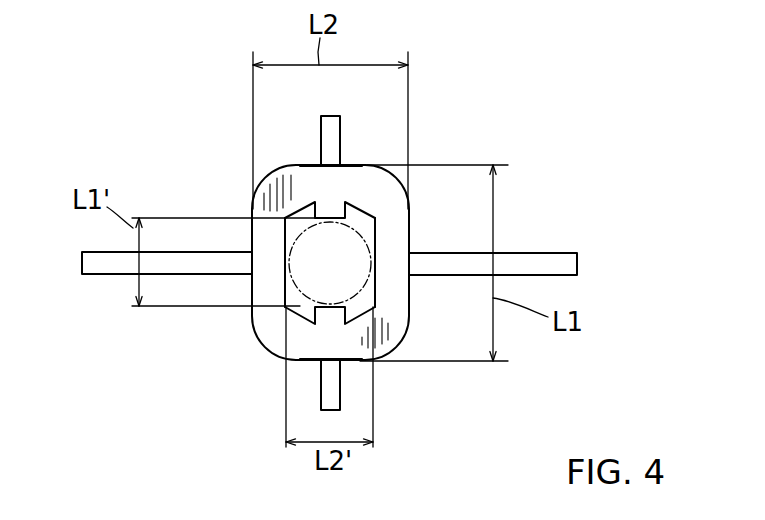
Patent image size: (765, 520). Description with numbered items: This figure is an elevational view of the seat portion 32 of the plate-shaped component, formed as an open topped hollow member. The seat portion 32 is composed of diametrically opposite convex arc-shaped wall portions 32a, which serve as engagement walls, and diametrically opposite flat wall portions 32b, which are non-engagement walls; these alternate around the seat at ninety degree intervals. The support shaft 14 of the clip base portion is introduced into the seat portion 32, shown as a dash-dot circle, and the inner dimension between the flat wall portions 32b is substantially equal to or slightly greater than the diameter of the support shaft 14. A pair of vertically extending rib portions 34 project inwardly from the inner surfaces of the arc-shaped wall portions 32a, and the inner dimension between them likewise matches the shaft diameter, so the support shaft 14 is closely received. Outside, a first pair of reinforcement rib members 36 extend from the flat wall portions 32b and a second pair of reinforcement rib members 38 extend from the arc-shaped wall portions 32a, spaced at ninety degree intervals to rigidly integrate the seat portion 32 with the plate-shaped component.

The support shaft 14 is at (322, 268).
The seat portion 32 is at (227, 203).
The arc-shaped wall portions 32a is at (352, 171).
The flat wall portions 32b is at (410, 240).
The rib portions 34 is at (297, 212).
The reinforcement rib members 36 is at (555, 265).
The reinforcement rib members 38 is at (330, 131).